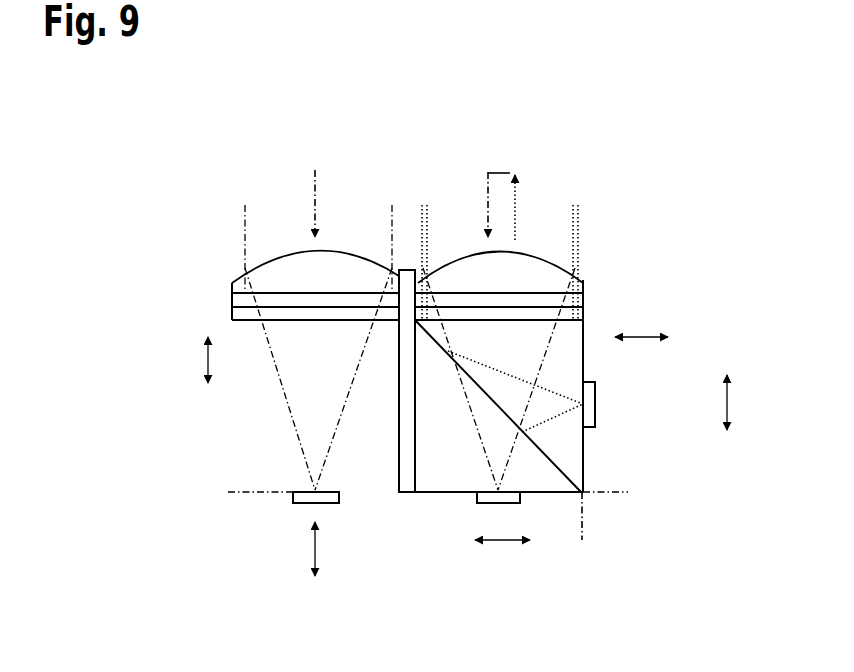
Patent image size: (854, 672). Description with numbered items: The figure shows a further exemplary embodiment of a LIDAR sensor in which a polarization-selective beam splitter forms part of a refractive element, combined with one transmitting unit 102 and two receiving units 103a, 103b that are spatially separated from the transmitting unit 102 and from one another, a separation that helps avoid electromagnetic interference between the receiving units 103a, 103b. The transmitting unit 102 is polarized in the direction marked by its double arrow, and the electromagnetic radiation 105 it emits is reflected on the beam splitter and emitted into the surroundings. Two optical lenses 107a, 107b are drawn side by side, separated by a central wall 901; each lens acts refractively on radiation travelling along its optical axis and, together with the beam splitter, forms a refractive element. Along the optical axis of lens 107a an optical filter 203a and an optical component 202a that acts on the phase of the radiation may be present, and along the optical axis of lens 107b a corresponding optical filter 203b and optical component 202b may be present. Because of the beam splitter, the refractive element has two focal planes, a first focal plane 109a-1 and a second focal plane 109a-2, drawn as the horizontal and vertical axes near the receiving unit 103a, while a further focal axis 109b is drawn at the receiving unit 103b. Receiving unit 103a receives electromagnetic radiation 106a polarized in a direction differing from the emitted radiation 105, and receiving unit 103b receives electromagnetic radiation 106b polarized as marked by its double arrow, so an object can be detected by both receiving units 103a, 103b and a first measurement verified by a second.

The transmitting unit 102 is at (597, 413).
The receiving unit 103a is at (477, 498).
The receiving unit 103b is at (293, 498).
The electromagnetic radiation 105 is at (520, 202).
The electromagnetic radiation 106a is at (510, 173).
The electromagnetic radiation 106b is at (317, 207).
The optical lens 107a is at (466, 253).
The optical lens 107b is at (350, 253).
The first focal plane 109a-1 is at (603, 492).
The second focal plane 109a-2 is at (583, 517).
The reference axis 109b is at (245, 491).
The optical component 202a is at (583, 313).
The optical component 202b is at (232, 313).
The optical filter 203a is at (583, 298).
The optical filter 203b is at (232, 298).
The partition wall 901 is at (405, 495).